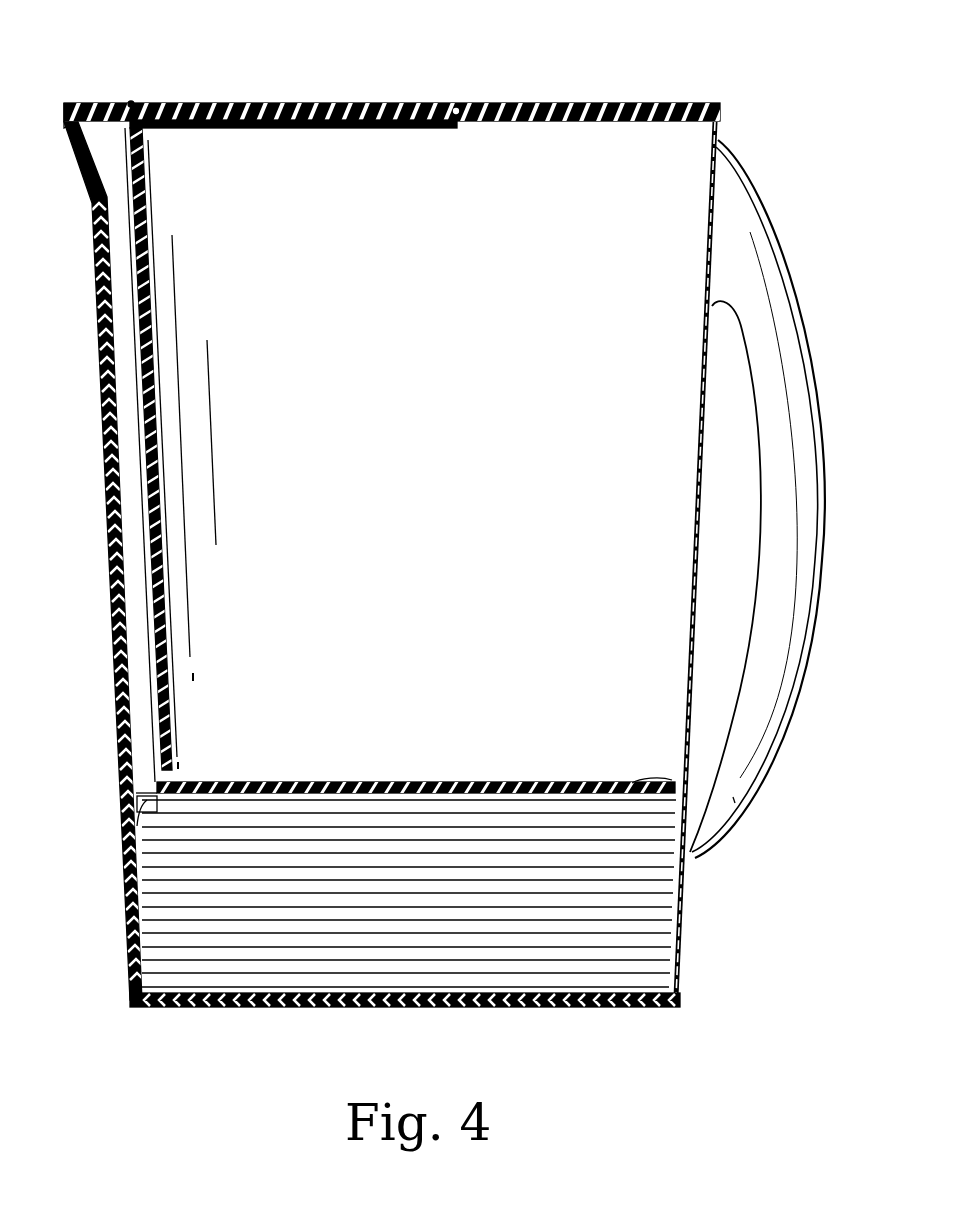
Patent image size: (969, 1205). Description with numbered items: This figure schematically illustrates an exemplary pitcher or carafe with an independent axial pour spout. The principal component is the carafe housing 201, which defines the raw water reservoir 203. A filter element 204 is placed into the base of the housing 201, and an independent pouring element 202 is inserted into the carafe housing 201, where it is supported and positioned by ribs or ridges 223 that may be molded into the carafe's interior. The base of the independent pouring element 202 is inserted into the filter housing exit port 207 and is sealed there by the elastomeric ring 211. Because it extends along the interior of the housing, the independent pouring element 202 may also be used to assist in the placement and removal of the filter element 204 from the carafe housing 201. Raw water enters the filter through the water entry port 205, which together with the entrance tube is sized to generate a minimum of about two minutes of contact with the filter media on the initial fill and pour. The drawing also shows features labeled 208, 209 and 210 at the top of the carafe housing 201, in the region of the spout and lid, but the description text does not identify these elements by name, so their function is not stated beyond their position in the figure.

The carafe housing 201 is at (100, 320).
The independent pouring element 202 is at (128, 422).
The raw water reservoir 203 is at (660, 272).
The filter element 204 is at (570, 877).
The water entry port 205 is at (630, 782).
The filter housing exit port 207 is at (135, 840).
The spout lip 208 is at (104, 103).
The lid plate 209 is at (316, 103).
The lid rim 210 is at (657, 103).
The elastomeric ring 211 is at (132, 790).
The ribs or ridges 223 is at (145, 473).